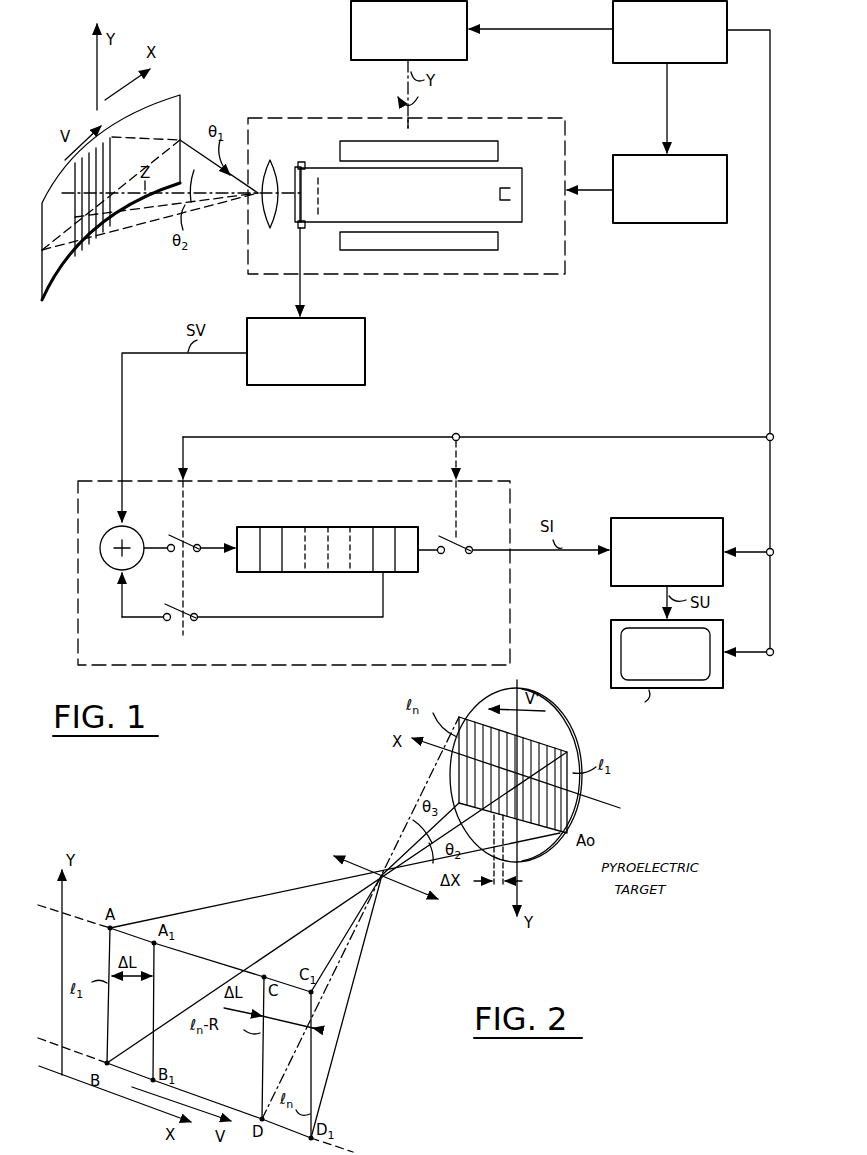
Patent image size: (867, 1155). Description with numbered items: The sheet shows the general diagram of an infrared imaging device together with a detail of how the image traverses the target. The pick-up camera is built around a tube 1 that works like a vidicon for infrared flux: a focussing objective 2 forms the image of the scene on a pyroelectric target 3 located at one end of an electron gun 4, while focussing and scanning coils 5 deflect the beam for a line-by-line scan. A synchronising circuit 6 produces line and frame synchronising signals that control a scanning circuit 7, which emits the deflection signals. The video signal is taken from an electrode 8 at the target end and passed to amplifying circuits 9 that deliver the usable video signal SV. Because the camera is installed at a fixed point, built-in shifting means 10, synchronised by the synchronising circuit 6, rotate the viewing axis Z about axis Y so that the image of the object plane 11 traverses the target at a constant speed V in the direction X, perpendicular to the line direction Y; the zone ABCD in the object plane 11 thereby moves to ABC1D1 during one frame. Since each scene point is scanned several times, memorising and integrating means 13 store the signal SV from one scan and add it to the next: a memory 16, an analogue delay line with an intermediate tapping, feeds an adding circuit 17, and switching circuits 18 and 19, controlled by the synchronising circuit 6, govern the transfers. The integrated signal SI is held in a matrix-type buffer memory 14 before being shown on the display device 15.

In FIG. 1, the tube 1 is at (303, 118).
In FIG. 1, the focussing objective 2 is at (272, 160).
In FIG. 2, the focussing objective 2 is at (370, 870).
In FIG. 1, the pyroelectric target 3 is at (294, 215).
In FIG. 2, the pyroelectric target 3 is at (537, 855).
In FIG. 1, the electron gun 4 is at (522, 170).
In FIG. 1, the focussing and scanning coils 5 is at (498, 242).
In FIG. 1, the synchronising circuit 6 is at (621, 64).
In FIG. 1, the scanning circuit 7 is at (622, 224).
In FIG. 1, the electrode 8 is at (303, 230).
In FIG. 1, the circuits 9 is at (366, 354).
In FIG. 1, the means for shifting the viewing axis 10 is at (351, 38).
In FIG. 1, the object plane 11 is at (55, 286).
In FIG. 2, the object plane 11 is at (88, 925).
In FIG. 1, the memorising and integrating means 13 is at (490, 482).
In FIG. 1, the buffer memory 14 is at (633, 517).
In FIG. 1, the display device 15 is at (611, 656).
In FIG. 1, the memory 16 is at (318, 527).
In FIG. 1, the adding circuit 17 is at (140, 526).
In FIG. 1, the switching circuit 18 is at (190, 600).
In FIG. 1, the switching circuit 19 is at (455, 560).